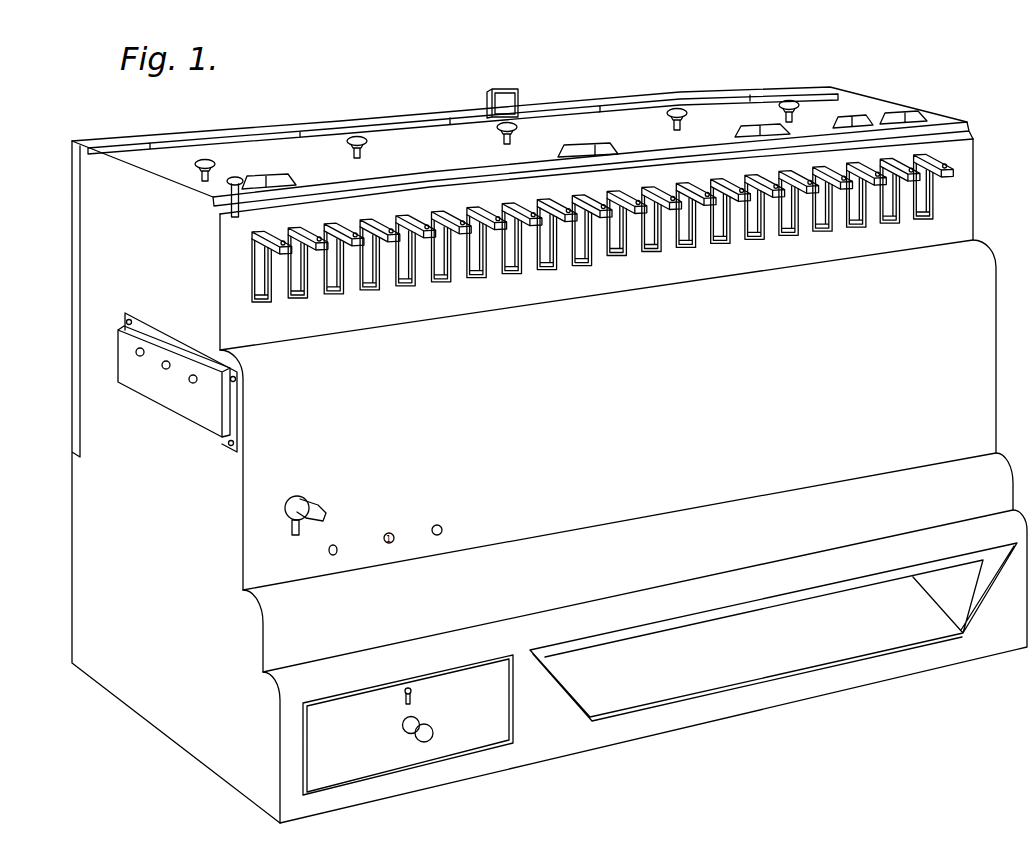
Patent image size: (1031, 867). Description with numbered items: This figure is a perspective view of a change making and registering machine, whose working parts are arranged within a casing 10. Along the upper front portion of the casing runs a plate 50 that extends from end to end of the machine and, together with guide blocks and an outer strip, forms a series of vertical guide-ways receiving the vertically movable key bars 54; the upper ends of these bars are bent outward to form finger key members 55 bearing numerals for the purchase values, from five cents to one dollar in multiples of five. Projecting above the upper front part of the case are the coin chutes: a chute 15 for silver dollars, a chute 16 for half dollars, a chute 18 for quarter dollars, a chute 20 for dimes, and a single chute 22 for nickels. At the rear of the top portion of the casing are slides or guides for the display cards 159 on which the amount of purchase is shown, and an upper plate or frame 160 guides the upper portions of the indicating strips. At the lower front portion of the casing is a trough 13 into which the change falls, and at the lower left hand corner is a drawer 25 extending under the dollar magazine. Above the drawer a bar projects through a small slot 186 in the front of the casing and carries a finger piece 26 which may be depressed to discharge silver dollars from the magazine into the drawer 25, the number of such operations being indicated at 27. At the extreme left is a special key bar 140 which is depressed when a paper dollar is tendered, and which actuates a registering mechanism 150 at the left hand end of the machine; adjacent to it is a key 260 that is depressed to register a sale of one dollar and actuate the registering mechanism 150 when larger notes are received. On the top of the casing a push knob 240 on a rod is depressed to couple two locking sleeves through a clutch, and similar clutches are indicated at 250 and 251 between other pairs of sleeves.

The casing 10 is at (48, 212).
The trough 13 is at (830, 653).
The chute 15 is at (280, 167).
The chute 16 is at (594, 150).
The chute 18 is at (757, 132).
The chute 20 is at (862, 111).
The chute 22 is at (907, 115).
The drawer 25 is at (462, 742).
The finger piece 26 is at (312, 510).
The indicator 27 is at (443, 527).
The plate 50 is at (505, 103).
The key bars 54 is at (602, 228).
The finger key members 55 is at (670, 196).
The special key bar 140 is at (236, 178).
The registering mechanism 150 is at (186, 403).
The display cards 159 is at (521, 87).
The upper plate or frame 160 is at (350, 126).
The slot 186 is at (295, 535).
The push knob 240 is at (676, 108).
The clutch 250 is at (360, 137).
The clutch 251 is at (789, 100).
The key 260 is at (194, 163).